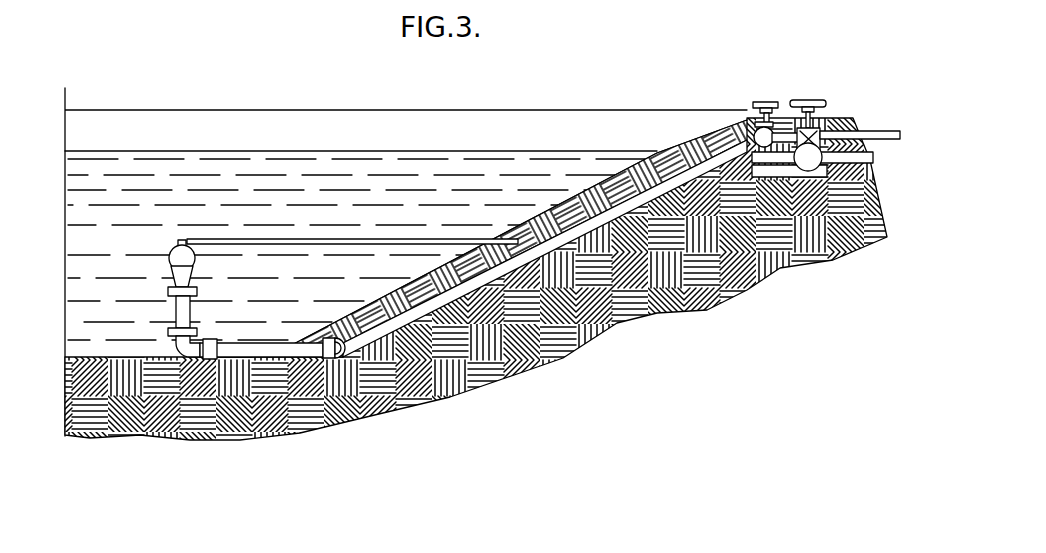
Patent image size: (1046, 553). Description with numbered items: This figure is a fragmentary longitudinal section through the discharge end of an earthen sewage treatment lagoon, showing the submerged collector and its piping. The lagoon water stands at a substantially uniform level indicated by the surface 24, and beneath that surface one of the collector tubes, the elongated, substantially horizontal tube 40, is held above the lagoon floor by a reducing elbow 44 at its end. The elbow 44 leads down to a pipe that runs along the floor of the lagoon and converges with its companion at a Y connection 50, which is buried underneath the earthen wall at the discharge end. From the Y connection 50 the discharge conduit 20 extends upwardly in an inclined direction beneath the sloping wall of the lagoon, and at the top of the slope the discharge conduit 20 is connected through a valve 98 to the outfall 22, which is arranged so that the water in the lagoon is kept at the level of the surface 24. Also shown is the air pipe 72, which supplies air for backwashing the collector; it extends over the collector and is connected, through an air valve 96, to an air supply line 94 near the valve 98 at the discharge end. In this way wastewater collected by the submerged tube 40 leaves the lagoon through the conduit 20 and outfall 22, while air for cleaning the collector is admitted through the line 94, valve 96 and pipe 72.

The discharge conduit 20 is at (692, 180).
The outfall 22 is at (875, 157).
The surface 24 is at (404, 151).
The tube 40 is at (213, 293).
The reducing elbow 44 is at (190, 260).
The Y connection 50 is at (352, 358).
The air pipe 72 is at (347, 240).
The air supply line 94 is at (883, 131).
The air valve 96 is at (767, 102).
The valve 98 is at (812, 100).